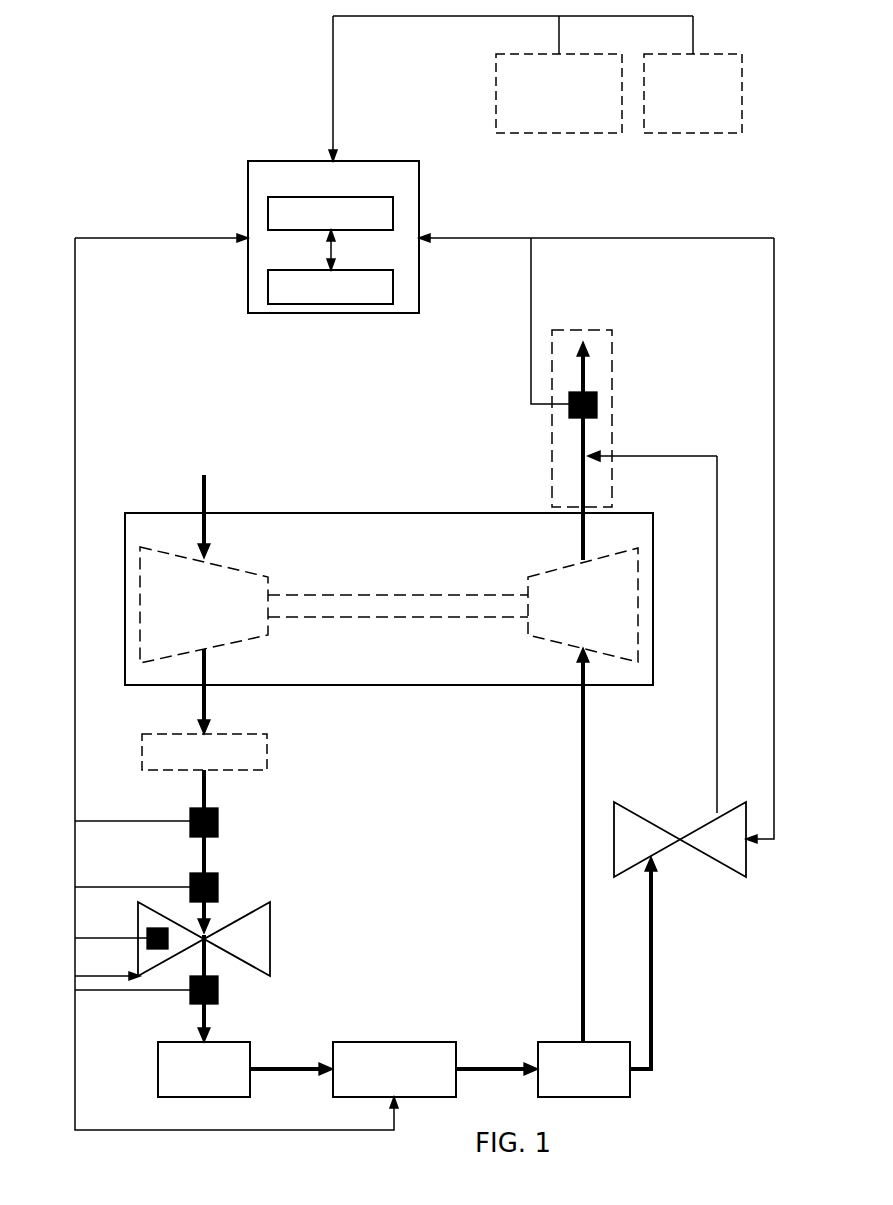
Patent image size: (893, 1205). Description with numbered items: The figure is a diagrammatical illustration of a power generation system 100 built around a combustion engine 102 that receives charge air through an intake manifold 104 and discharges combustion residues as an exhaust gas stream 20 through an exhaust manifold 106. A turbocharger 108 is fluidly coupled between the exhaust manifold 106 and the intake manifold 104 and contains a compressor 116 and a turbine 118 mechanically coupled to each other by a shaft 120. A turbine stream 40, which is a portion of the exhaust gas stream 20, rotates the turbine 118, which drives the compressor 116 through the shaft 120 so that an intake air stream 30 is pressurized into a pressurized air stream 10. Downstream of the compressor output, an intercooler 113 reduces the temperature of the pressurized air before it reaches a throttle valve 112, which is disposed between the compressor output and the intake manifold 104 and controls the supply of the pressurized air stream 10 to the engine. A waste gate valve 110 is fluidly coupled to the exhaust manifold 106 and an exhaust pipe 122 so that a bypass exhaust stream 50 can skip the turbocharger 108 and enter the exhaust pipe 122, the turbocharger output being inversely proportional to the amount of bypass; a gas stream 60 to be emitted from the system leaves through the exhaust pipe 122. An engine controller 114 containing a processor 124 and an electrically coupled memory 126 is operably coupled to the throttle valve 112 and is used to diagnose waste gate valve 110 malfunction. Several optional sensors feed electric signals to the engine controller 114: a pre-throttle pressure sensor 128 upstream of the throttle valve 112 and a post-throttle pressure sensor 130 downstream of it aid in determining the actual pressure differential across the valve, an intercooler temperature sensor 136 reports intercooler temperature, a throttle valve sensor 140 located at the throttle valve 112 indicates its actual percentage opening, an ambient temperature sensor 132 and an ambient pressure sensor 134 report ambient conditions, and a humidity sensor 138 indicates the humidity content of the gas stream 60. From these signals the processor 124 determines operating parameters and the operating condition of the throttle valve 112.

The power generation system 100 is at (134, 56).
The combustion engine 102 is at (395, 1042).
The intake manifold 104 is at (158, 1068).
The exhaust manifold 106 is at (553, 1042).
The turbocharger 108 is at (320, 513).
The waste gate valve 110 is at (644, 816).
The throttle valve 112 is at (272, 940).
The intercooler 113 is at (270, 752).
The engine controller 114 is at (390, 161).
The compressor 116 is at (245, 570).
The turbine 118 is at (530, 578).
The shaft 120 is at (470, 595).
The exhaust pipe 122 is at (552, 455).
The processor 124 is at (268, 213).
The memory 126 is at (268, 288).
The pre-throttle pressure sensor 128 is at (220, 887).
The post-throttle pressure sensor 130 is at (220, 992).
The ambient temperature sensor 132 is at (559, 133).
The ambient pressure sensor 134 is at (693, 133).
The intercooler temperature sensor 136 is at (220, 822).
The humidity sensor 138 is at (598, 410).
The throttle valve sensor 140 is at (147, 935).
The pressurized air stream 10 is at (212, 668).
The exhaust gas stream 20 is at (482, 1066).
The intake air stream 30 is at (204, 492).
The turbine stream 40 is at (580, 782).
The bypass exhaust stream 50 is at (654, 938).
The gas stream 60 is at (588, 440).